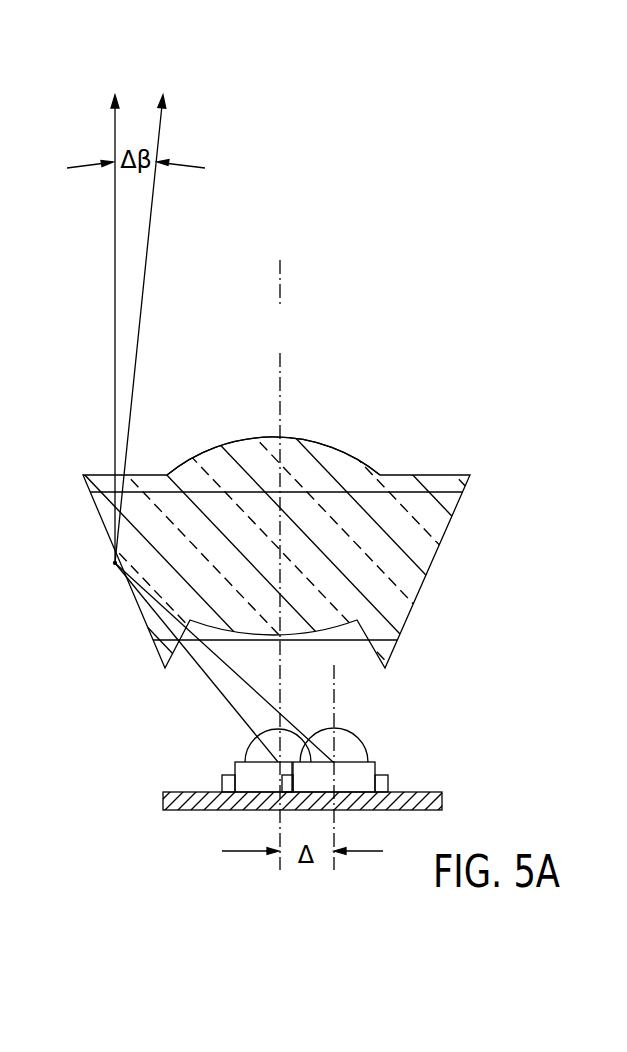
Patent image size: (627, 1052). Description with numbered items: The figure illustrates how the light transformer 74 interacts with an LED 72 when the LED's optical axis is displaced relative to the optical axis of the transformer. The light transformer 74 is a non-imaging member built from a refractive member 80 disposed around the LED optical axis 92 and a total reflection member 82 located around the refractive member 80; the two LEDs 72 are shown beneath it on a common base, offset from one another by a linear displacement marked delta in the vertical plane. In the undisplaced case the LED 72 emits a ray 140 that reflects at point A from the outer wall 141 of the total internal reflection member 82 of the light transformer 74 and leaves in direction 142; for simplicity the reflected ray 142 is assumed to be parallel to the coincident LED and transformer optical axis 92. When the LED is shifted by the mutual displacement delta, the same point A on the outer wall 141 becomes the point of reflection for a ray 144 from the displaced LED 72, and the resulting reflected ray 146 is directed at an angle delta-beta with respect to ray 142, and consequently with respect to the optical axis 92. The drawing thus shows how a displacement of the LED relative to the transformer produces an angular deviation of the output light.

The LED 72 is at (250, 780).
The light transformer 74 is at (370, 410).
The refractive member 80 is at (317, 523).
The total reflection member 82 is at (405, 582).
The optical axis 92 is at (300, 565).
The ray 140 is at (196, 662).
The outer wall 141 is at (125, 590).
The reflected ray direction 142 is at (115, 314).
The ray 144 is at (224, 662).
The reflected ray 146 is at (151, 314).